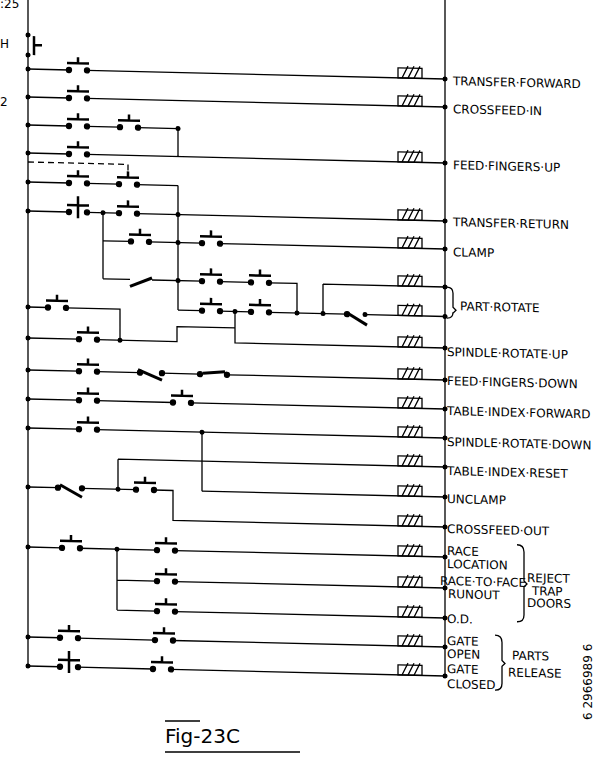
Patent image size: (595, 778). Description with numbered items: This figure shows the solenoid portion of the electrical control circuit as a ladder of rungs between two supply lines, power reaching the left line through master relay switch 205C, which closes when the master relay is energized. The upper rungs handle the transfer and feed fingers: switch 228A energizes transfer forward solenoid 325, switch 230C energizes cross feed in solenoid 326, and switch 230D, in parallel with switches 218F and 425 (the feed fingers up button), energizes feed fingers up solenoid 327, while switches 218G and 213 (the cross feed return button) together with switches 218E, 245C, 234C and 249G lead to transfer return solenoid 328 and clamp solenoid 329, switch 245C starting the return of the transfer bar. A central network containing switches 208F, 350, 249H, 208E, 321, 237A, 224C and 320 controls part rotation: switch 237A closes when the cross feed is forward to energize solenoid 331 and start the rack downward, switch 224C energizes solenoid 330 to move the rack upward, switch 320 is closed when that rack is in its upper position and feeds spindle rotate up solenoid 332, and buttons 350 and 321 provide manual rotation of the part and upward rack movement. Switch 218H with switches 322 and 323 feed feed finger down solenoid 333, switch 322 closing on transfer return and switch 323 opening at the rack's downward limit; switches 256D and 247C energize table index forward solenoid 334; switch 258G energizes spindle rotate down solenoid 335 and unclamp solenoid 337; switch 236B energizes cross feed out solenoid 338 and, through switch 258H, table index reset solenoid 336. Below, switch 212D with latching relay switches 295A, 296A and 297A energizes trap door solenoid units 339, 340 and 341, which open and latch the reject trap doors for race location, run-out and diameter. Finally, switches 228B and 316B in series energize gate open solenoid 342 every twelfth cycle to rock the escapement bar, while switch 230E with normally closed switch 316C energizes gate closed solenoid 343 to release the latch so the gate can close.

The master relay switch 205C is at (38, 43).
The transfer forward relay switch 228A is at (80, 60).
The relay switch 230C is at (80, 88).
The cycle relay switch 218F is at (78, 118).
The feed fingers up push button 425 is at (131, 114).
The relay switch 230D is at (80, 145).
The cross feed return push button 213 is at (131, 170).
The cycle relay switch 218G is at (72, 183).
The relay switch 245C is at (129, 203).
The cycle relay switch 218E is at (65, 218).
The switch contact 234C is at (141, 235).
The switch contact 249G is at (213, 228).
The relay switch 208F is at (210, 265).
The part rotate push button 350 is at (265, 266).
The switch contact 249H is at (212, 294).
The relay switch 208E is at (262, 294).
The rack up push button 321 is at (59, 295).
The cross feed forward switch 237A is at (137, 288).
The relay switch 224C is at (86, 327).
The cycle relay switch 218H is at (86, 359).
The transfer return switch 322 is at (143, 367).
The rack down limit switch 323 is at (218, 369).
The rack upper position switch 320 is at (349, 310).
The gaging relay switch 256D is at (91, 387).
The relay switch 247C is at (185, 387).
The relay switch 258G is at (91, 416).
The switch contact 236B is at (70, 467).
The relay switch 258H is at (146, 477).
The switch contact 212D is at (75, 537).
The latching relay switch 295A is at (168, 536).
The latching relay switch 296A is at (168, 566).
The latching relay switch 297A is at (168, 596).
The relay switch 228B is at (72, 625).
The relay switch 316B is at (166, 625).
The relay switch 230E is at (69, 672).
The normally closed relay switch 316C is at (173, 666).
The transfer forward solenoid 325 is at (398, 59).
The cross feed in solenoid 326 is at (398, 88).
The feed fingers up solenoid 327 is at (398, 144).
The transfer return solenoid 328 is at (398, 202).
The clamp solenoid 329 is at (398, 230).
The part rotate solenoid 330 is at (398, 268).
The part rotate solenoid 331 is at (398, 298).
The spindle rotate up solenoid 332 is at (398, 331).
The feed finger down solenoid 333 is at (398, 361).
The table index forward solenoid 334 is at (398, 390).
The spindle rotate down solenoid 335 is at (398, 419).
The table index reset solenoid 336 is at (398, 448).
The unclamp solenoid 337 is at (398, 478).
The cross feed out solenoid 338 is at (398, 508).
The race location trap door solenoid unit 339 is at (398, 539).
The run-out trap door solenoid unit 340 is at (398, 569).
The diameter trap door solenoid unit 341 is at (398, 599).
The gate open solenoid 342 is at (398, 628).
The gate closed solenoid 343 is at (398, 657).